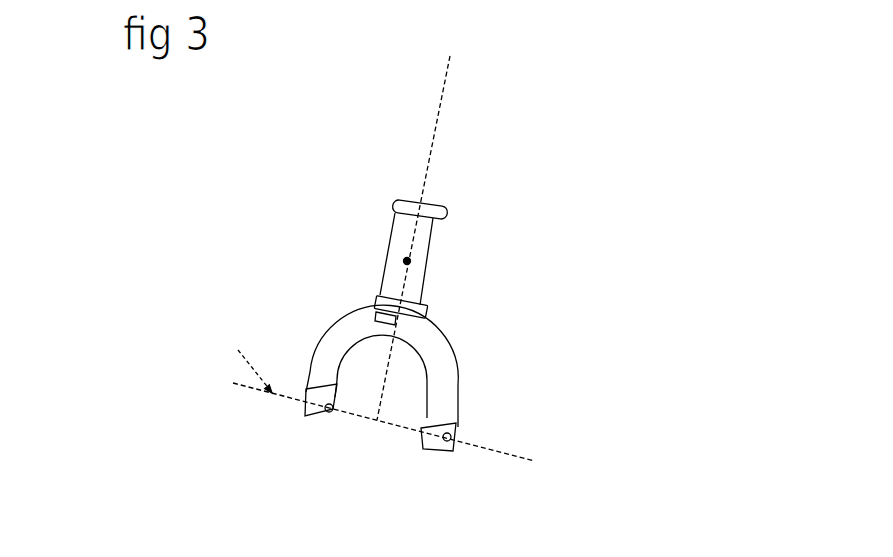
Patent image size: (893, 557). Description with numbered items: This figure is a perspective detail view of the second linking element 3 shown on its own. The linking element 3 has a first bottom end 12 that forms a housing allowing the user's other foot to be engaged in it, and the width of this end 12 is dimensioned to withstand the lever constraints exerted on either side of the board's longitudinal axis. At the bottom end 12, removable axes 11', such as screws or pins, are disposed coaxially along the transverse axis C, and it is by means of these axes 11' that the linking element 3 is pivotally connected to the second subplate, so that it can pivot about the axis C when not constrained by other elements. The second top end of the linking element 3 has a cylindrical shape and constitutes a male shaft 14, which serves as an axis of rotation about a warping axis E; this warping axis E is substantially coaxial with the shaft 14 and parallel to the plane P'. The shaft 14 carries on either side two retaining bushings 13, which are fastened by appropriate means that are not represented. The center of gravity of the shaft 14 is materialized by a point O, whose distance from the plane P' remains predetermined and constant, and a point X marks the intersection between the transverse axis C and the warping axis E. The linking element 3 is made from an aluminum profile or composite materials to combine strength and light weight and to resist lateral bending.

The second linking element 3 is at (79, 258).
The removable axes 11' is at (395, 418).
The first bottom end 12 is at (445, 347).
The retaining bushings 13 is at (445, 215).
The male shaft 14 is at (392, 272).
The center of gravity point O is at (407, 260).
The warping axis E is at (451, 58).
The intersection point X is at (378, 420).
The transverse axis C is at (239, 351).